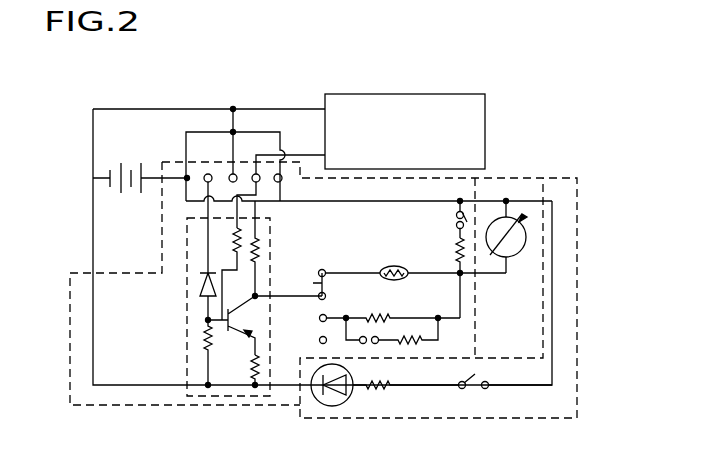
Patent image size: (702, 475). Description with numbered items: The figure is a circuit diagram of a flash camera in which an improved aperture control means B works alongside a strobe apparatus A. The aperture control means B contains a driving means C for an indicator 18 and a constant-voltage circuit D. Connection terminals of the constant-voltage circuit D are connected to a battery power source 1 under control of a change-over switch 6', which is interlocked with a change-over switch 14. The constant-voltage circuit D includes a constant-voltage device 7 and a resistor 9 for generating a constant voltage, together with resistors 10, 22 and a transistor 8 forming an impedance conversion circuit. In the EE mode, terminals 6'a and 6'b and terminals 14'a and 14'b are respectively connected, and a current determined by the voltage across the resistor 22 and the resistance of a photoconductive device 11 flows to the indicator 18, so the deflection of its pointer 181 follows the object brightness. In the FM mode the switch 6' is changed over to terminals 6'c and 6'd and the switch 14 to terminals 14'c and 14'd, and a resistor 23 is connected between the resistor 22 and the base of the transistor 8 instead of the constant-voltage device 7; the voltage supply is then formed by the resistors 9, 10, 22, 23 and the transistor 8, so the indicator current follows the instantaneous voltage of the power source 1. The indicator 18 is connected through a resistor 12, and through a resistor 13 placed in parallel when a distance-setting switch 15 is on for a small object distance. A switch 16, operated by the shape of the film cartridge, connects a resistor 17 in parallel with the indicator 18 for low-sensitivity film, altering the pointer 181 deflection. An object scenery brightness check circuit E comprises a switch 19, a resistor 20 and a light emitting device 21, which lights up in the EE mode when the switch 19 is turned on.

The battery power source 1 is at (128, 192).
The change-over switch 6' is at (255, 135).
The terminal 6'a is at (206, 161).
The terminal 6'b is at (249, 161).
The terminal 6'c is at (268, 196).
The terminal 6'd is at (306, 203).
The constant-voltage device 7 is at (198, 290).
The transistor 8 is at (242, 328).
The resistor 9 is at (199, 340).
The resistor 10 is at (259, 365).
The photoconductive device 11 is at (393, 266).
The resistor 12 is at (392, 313).
The resistor 13 is at (436, 331).
The change-over switch 14 is at (288, 282).
The terminal 14'a is at (347, 262).
The terminal 14'b is at (349, 293).
The terminal 14'c is at (300, 321).
The terminal 14'd is at (300, 348).
The switch 15 is at (372, 344).
The switch 16 is at (456, 216).
The resistor 17 is at (456, 246).
The indicator 18 is at (519, 258).
The pointer 181 is at (525, 220).
The switch 19 is at (470, 388).
The resistor 20 is at (388, 392).
The light emitting device 21 is at (348, 398).
The resistor 22 is at (259, 246).
The resistor 23 is at (233, 234).
The strobe apparatus A is at (486, 128).
The aperture control means B is at (535, 178).
The driving means C is at (478, 318).
The constant-voltage circuit D is at (186, 223).
The object scenery brightness check circuit E is at (578, 307).